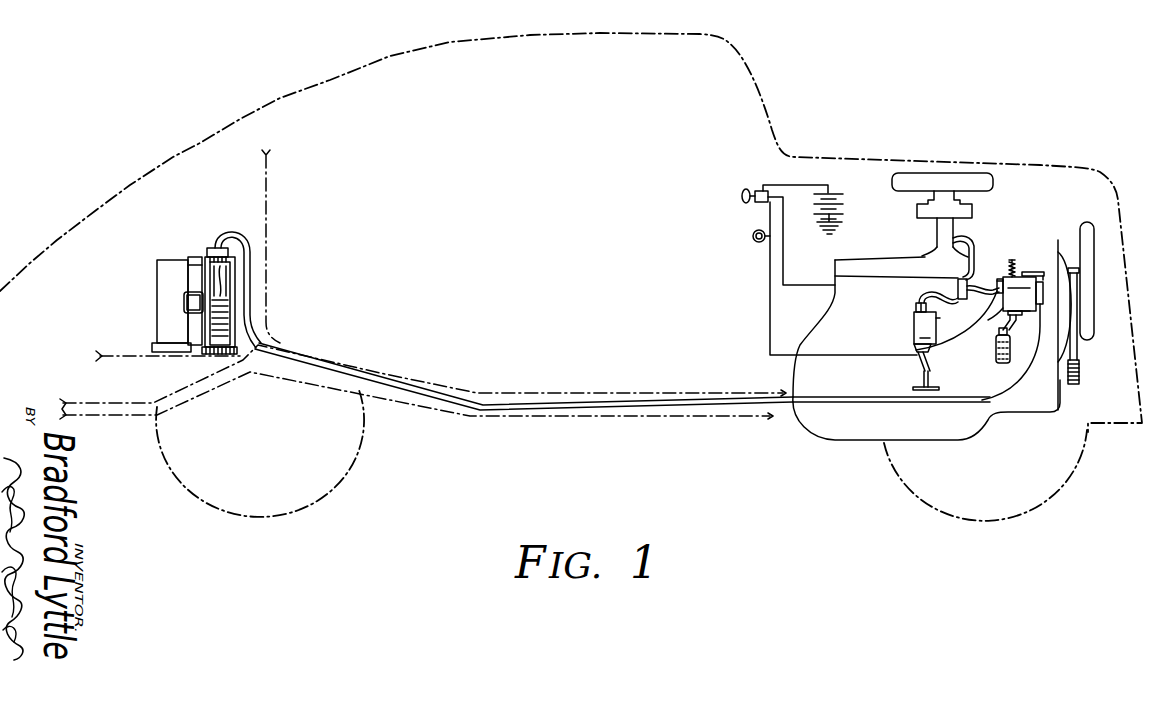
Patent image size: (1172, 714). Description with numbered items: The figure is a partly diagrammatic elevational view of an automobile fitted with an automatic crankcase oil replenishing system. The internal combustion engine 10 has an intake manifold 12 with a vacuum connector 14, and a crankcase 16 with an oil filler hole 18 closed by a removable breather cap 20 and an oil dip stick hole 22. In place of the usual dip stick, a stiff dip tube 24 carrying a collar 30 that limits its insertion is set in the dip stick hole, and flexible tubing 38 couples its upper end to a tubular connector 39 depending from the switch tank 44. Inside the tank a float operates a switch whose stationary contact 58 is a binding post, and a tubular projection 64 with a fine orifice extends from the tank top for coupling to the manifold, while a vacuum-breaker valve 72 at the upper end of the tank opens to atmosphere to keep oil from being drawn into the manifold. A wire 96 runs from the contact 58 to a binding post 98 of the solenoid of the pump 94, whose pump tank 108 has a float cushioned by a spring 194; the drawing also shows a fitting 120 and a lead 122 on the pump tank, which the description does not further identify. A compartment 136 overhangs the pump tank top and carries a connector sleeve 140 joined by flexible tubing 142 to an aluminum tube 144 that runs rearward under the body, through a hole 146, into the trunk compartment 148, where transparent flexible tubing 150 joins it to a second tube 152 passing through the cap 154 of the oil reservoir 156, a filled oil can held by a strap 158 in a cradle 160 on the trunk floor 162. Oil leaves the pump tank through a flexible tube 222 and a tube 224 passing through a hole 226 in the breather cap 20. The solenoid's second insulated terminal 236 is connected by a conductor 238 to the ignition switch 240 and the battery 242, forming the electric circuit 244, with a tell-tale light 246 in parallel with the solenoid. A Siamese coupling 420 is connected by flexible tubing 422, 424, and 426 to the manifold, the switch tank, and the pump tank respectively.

The internal combustion engine 10 is at (1024, 272).
The intake manifold 12 is at (930, 228).
The vacuum connector 14 is at (937, 242).
The crankcase 16 is at (825, 438).
The oil filler hole 18 is at (1002, 366).
The breather cap 20 is at (1003, 336).
The oil dip stick hole 22 is at (891, 410).
The dip tube 24 is at (845, 376).
The collar 30 is at (920, 388).
The flexible tubing 38 is at (921, 365).
The tubular connector 39 is at (917, 350).
The tank 44 is at (908, 323).
The stationary contact 58 is at (930, 338).
The tubular projection 64 is at (947, 321).
The vacuum-breaker valve 72 is at (911, 308).
The pump 94 is at (1040, 261).
The wire 96 is at (956, 329).
The binding post 98 is at (1011, 258).
The pump tank 108 is at (1042, 284).
The inlet fitting 120 is at (999, 283).
The wire 122 is at (982, 320).
The compartment 136 is at (1038, 265).
The connector sleeve 140 is at (1074, 272).
The flexible tubing 142 is at (1025, 289).
The tube 144 is at (1022, 378).
The hole 146 is at (264, 341).
The trunk compartment 148 is at (152, 196).
The flexible tubing 150 is at (243, 233).
The second tube 152 is at (191, 262).
The cap 154 is at (210, 247).
The oil reservoir 156 is at (155, 272).
The strap 158 is at (185, 305).
The cradle 160 is at (154, 345).
The floor 162 is at (110, 352).
The spring 194 is at (1013, 252).
The flexible tube 222 is at (1012, 312).
The tube 224 is at (1008, 336).
The hole 226 is at (1012, 340).
The second insulated terminal 236 is at (999, 274).
The conductor 238 is at (818, 284).
The ignition switch 240 is at (764, 187).
The battery 242 is at (840, 205).
The electric circuit 244 is at (765, 318).
The tell-tale light 246 is at (753, 237).
The Siamese coupling 420 is at (955, 292).
The flexible tubing 422 is at (962, 268).
The flexible tubing 424 is at (926, 297).
The flexible tubing 426 is at (984, 301).